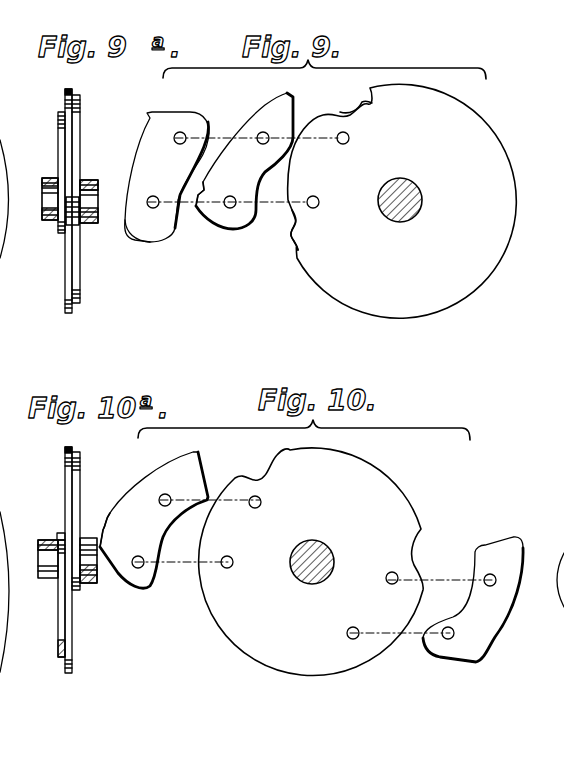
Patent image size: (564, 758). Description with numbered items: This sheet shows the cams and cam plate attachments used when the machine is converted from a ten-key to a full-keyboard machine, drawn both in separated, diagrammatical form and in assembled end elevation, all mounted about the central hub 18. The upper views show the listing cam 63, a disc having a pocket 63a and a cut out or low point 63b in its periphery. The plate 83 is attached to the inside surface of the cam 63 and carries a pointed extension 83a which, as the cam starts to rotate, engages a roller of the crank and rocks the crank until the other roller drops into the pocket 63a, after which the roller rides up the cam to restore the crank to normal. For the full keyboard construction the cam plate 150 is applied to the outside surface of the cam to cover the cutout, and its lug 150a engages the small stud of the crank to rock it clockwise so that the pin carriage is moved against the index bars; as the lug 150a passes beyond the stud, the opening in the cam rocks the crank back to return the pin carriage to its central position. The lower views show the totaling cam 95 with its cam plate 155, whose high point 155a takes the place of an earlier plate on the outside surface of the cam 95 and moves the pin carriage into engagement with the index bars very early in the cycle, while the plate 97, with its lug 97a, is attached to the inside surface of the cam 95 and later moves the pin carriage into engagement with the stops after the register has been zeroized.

In FIG. 9, the hub / shaft 18 is at (399, 222).
In FIG. 9A, the hub / shaft 18 is at (92, 225).
In FIG. 10, the hub / shaft 18 is at (303, 585).
In FIG. 10A, the hub / shaft 18 is at (78, 580).
In FIG. 9, the cam 63 is at (340, 290).
In FIG. 9A, the cam 63 is at (72, 306).
In FIG. 9, the pocket 63a is at (300, 238).
In FIG. 9, the cut out or low point 63b is at (372, 104).
In FIG. 9, the plate 83 is at (155, 232).
In FIG. 9A, the plate 83 is at (60, 234).
In FIG. 9, the pointed extension 83a is at (150, 118).
In FIG. 9, the cam plate 150 is at (285, 100).
In FIG. 9A, the cam plate 150 is at (78, 98).
In FIG. 9, the lug 150a is at (196, 205).
In FIG. 10, the totaling cam 95 is at (320, 667).
In FIG. 10A, the totaling cam 95 is at (72, 668).
In FIG. 10, the plate 97 is at (494, 628).
In FIG. 10A, the plate 97 is at (57, 610).
In FIG. 10, the lug of plate 97 97a is at (478, 662).
In FIG. 10, the cam plate 155 is at (168, 480).
In FIG. 10A, the cam plate 155 is at (80, 466).
In FIG. 10, the high point 155a is at (103, 527).